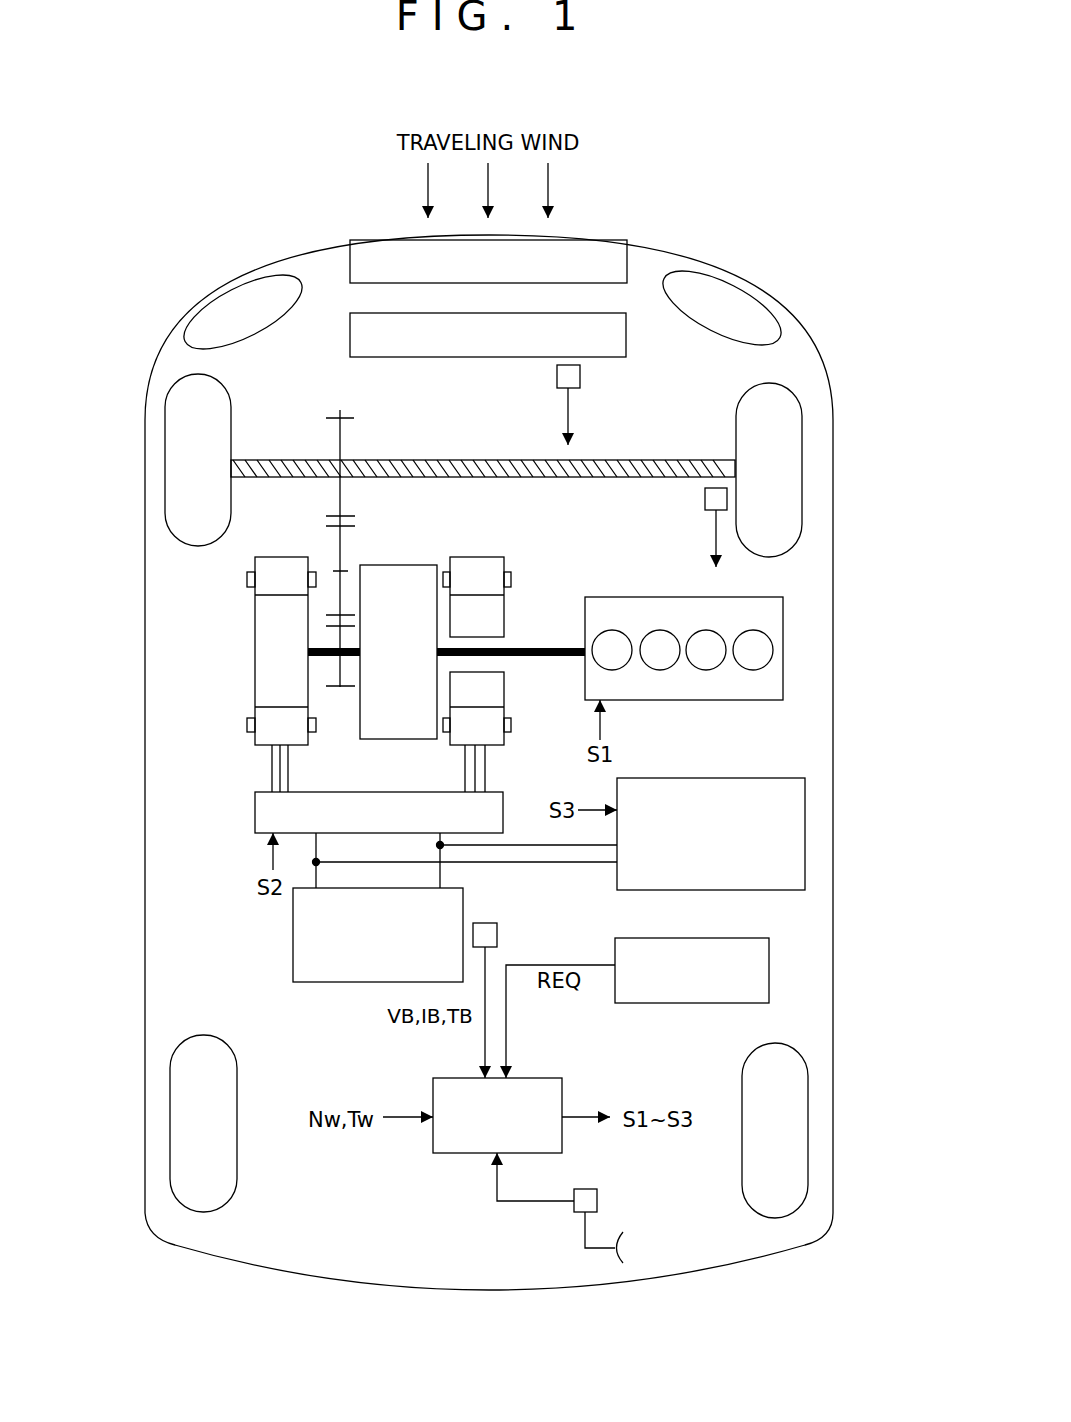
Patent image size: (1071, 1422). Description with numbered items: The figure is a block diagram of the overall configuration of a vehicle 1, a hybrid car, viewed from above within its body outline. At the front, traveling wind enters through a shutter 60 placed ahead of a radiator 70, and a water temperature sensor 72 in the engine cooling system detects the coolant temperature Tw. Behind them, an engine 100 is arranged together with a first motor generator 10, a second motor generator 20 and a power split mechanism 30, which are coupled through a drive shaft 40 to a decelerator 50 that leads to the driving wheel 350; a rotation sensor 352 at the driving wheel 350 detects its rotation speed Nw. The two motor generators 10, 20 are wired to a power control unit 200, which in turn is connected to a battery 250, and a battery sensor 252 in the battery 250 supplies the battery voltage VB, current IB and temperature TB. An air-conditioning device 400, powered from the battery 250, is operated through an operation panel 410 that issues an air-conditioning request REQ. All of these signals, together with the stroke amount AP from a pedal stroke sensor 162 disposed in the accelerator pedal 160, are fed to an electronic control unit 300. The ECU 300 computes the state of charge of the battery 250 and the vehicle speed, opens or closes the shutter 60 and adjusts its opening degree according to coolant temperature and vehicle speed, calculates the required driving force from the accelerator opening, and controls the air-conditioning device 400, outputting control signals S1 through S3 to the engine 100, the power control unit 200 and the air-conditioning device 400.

The vehicle 1 is at (497, 101).
The first motor generator 10 is at (478, 555).
The second motor generator 20 is at (290, 556).
The power split mechanism 30 is at (400, 563).
The drive shaft 40 is at (318, 658).
The decelerator 50 is at (341, 410).
The shutter 60 is at (592, 240).
The radiator 70 is at (628, 337).
The water temperature sensor 72 is at (582, 377).
The engine 100 is at (616, 596).
The accelerator pedal 160 is at (625, 1250).
The pedal stroke sensor 162 is at (598, 1200).
The power control unit (PCU) 200 is at (254, 811).
The battery 250 is at (292, 934).
The battery sensor 252 is at (498, 937).
The electronic control unit (ECU) 300 is at (537, 1078).
The driving wheel 350 is at (738, 393).
The rotation sensor 352 is at (703, 498).
The air-conditioning device 400 is at (717, 778).
The operation panel 410 is at (717, 938).